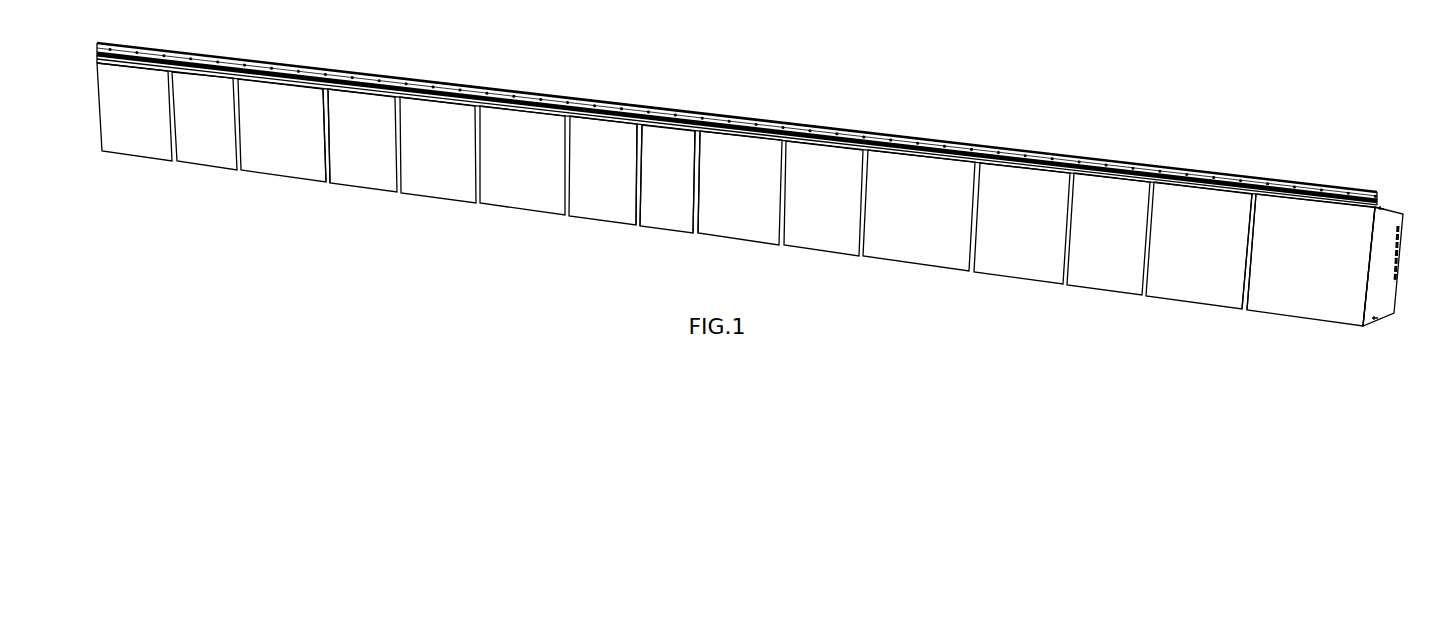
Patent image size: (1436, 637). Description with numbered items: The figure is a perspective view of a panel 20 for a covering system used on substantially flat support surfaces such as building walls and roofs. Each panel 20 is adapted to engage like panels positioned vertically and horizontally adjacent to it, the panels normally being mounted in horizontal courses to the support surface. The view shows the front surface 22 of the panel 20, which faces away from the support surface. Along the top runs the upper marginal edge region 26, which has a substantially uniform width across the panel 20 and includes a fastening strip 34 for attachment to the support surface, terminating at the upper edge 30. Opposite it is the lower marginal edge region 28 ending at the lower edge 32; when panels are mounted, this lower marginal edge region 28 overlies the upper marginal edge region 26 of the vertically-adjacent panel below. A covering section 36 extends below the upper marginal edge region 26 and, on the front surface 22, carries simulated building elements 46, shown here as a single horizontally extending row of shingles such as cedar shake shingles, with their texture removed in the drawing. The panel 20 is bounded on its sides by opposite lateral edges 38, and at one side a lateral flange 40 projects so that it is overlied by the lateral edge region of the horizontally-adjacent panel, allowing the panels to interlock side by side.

The panel 20 is at (752, 99).
The front surface 22 is at (522, 160).
The upper marginal edge region 26 is at (990, 145).
The lower marginal edge region 28 is at (832, 242).
The upper edge 30 is at (850, 130).
The lower edge 32 is at (947, 263).
The fastening strip 34 is at (605, 102).
The covering section 36 is at (1122, 255).
The lateral edges 38 is at (100, 110).
The lateral flange 40 is at (1389, 228).
The simulated building elements 46 is at (315, 167).